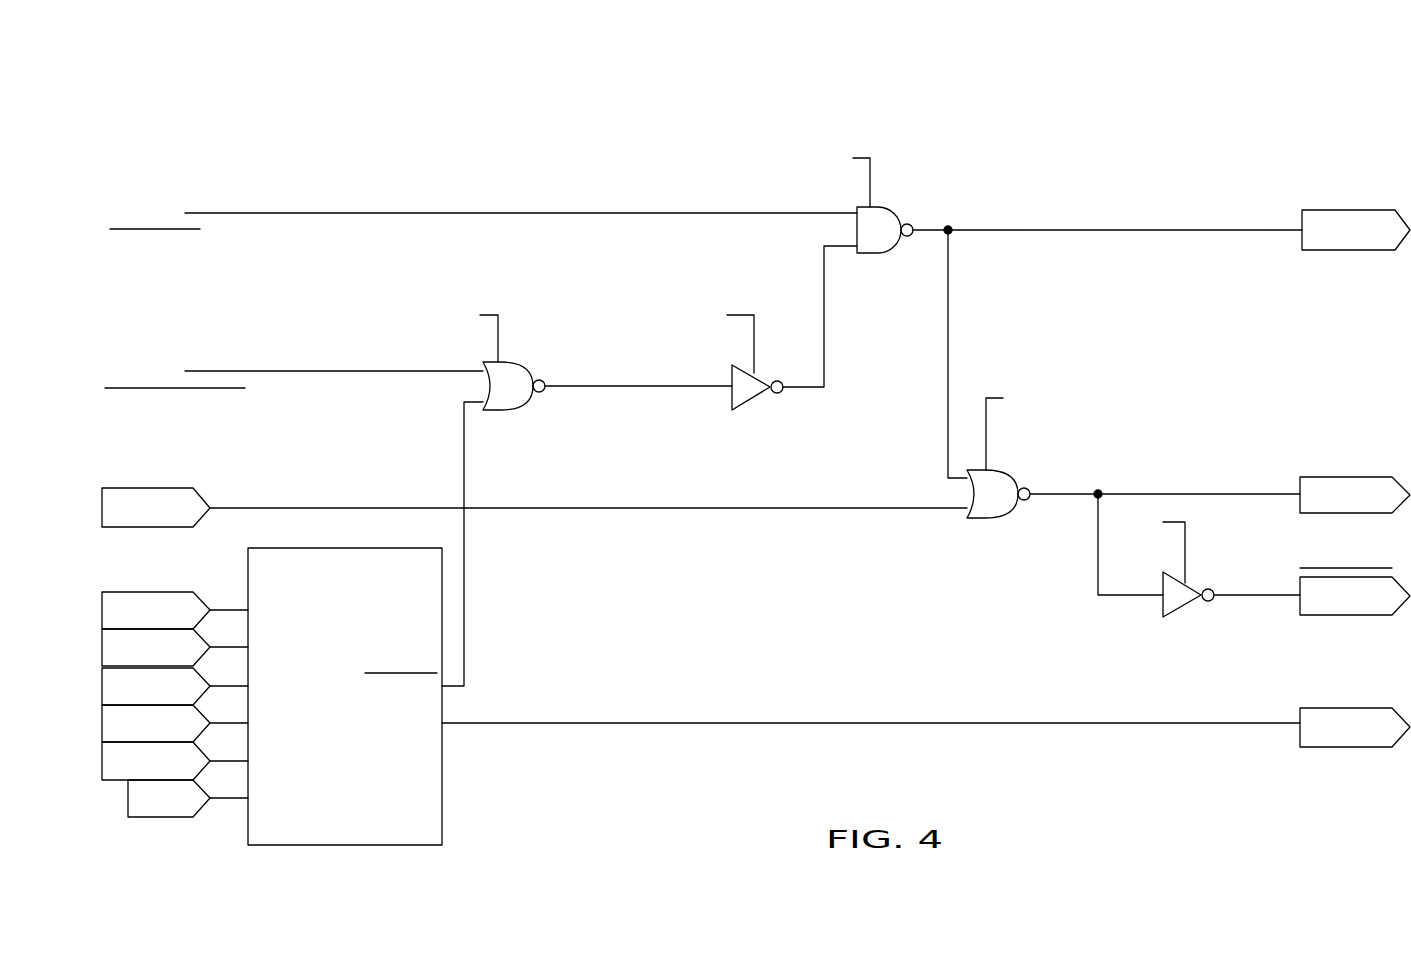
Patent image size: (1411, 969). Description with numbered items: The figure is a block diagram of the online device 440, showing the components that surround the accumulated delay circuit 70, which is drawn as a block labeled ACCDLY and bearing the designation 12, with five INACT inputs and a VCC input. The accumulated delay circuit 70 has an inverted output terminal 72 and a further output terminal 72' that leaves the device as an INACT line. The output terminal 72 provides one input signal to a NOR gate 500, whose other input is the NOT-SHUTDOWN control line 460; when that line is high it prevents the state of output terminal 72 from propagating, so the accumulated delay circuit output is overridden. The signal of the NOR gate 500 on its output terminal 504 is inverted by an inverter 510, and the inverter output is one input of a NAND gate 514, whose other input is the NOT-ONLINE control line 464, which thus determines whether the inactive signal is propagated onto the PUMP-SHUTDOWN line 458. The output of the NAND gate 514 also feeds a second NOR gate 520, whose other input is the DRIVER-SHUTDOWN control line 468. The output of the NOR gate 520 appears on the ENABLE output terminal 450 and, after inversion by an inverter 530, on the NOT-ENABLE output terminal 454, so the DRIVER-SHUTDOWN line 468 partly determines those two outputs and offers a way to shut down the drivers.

The online device 440 is at (436, 158).
The NOT-ONLINE control line 464 is at (300, 212).
The NOT-SHUTDOWN control line 460 is at (300, 370).
The DRIVER-SHUTDOWN control line 468 is at (300, 507).
The PUMP-SHUTDOWN line 458 is at (1281, 228).
The ENABLE-232 output terminal 450 is at (1281, 494).
The NOT-ENABLE-232 output terminal 454 is at (1281, 594).
The NOR gate 500 is at (483, 387).
The output terminal of NOR gate 504 is at (620, 390).
The inverter 510 is at (732, 406).
The NAND gate 514 is at (857, 233).
The second NOR gate 520 is at (985, 521).
The inverter 530 is at (1166, 613).
The output terminal of accumulated delay circuit 72 is at (480, 544).
The INACT output of access delay circuit 72' is at (926, 713).
The accumulated delay circuit 70 is at (357, 728).
The access delay circuit 12 is at (375, 847).